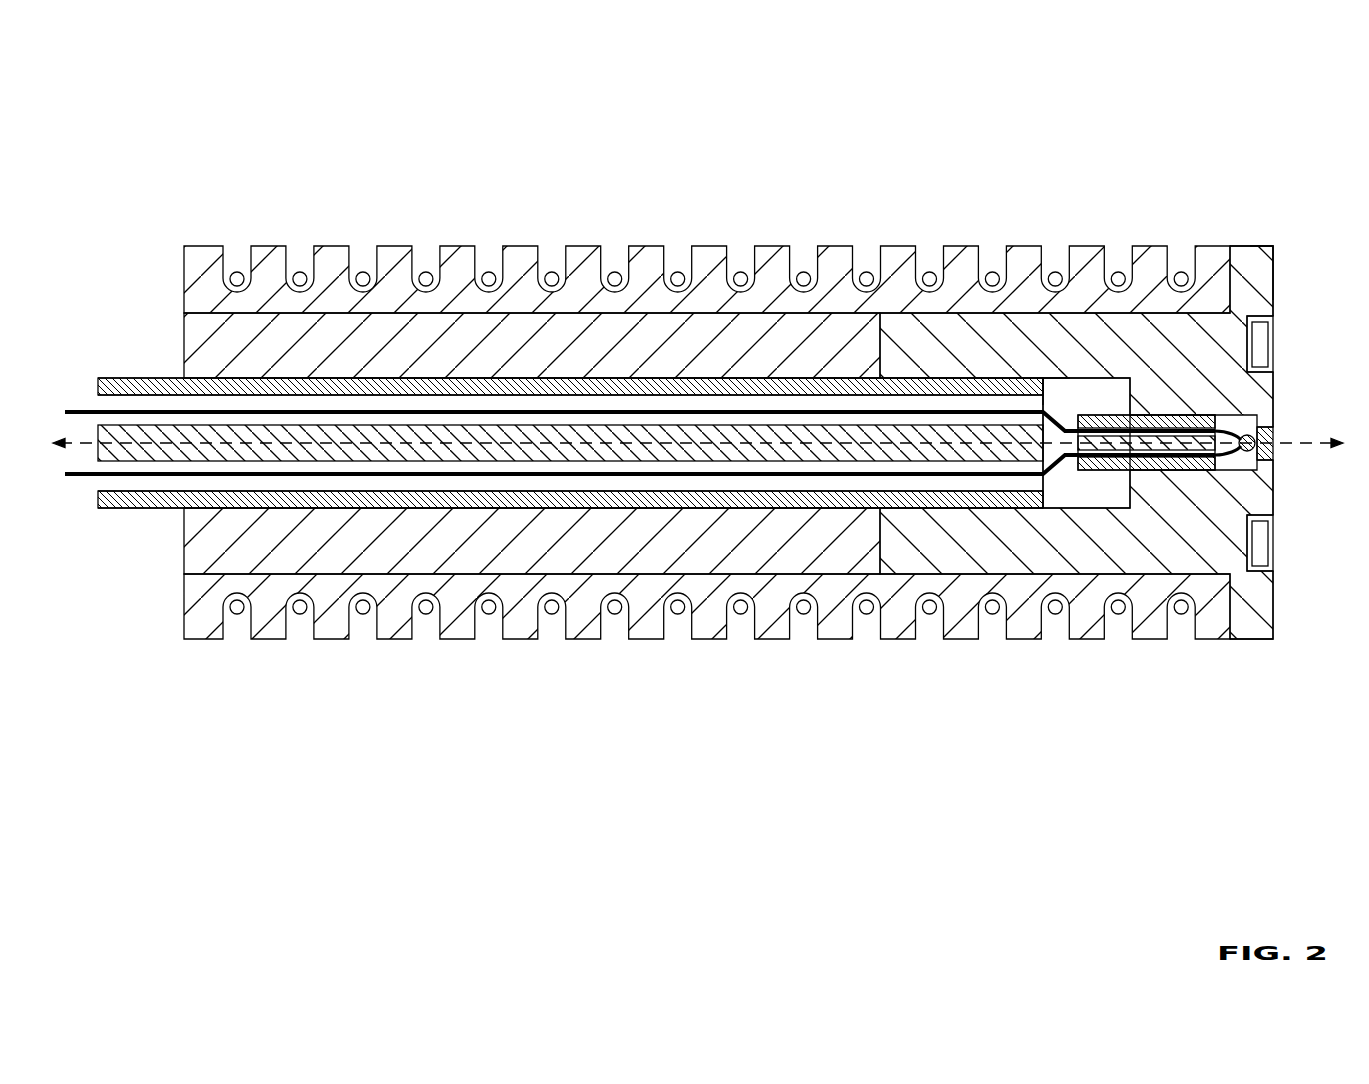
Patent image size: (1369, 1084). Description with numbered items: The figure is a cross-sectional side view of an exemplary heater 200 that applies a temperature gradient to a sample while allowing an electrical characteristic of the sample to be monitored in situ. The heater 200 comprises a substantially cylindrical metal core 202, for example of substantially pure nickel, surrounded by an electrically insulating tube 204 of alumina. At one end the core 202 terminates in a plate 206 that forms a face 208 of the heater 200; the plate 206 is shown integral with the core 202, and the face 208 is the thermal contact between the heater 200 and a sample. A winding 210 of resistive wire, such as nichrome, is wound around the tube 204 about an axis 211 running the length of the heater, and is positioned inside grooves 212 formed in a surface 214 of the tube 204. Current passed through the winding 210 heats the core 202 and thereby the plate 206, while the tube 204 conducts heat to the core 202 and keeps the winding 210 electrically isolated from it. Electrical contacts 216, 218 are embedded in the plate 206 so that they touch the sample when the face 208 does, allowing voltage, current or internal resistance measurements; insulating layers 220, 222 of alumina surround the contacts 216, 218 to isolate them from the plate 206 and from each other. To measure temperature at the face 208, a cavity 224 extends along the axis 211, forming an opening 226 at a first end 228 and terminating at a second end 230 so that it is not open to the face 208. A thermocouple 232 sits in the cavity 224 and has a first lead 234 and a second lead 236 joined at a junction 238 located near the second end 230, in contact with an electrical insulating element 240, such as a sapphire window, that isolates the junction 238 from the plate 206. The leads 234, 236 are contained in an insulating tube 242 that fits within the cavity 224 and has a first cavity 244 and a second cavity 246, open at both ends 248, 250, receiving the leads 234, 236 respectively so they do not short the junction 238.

The heater 200 is at (138, 88).
The core 202 is at (184, 356).
The electrically insulating tube 204 is at (1090, 316).
The plate 206 is at (1258, 247).
The face 208 is at (1277, 272).
The winding 210 is at (927, 288).
The axis 211 is at (1288, 446).
The grooves 212 is at (679, 240).
The surface 214 is at (588, 648).
The electrical contact 216 is at (1269, 345).
The electrical contact 218 is at (1269, 548).
The insulating layer 220 is at (1264, 318).
The insulating layer 222 is at (1264, 520).
The cavity 224 is at (1066, 498).
The opening 226 is at (168, 532).
The first end 228 is at (218, 703).
The second end 230 is at (1247, 683).
The thermocouple 232 is at (160, 378).
The first lead 234 is at (68, 410).
The second lead 236 is at (68, 477).
The junction 238 is at (1250, 430).
The electrical insulating element 240 is at (1266, 420).
The tube 242 is at (468, 378).
The first cavity 244 is at (550, 390).
The second cavity 246 is at (436, 498).
The end 248 is at (88, 562).
The end 250 is at (1047, 368).